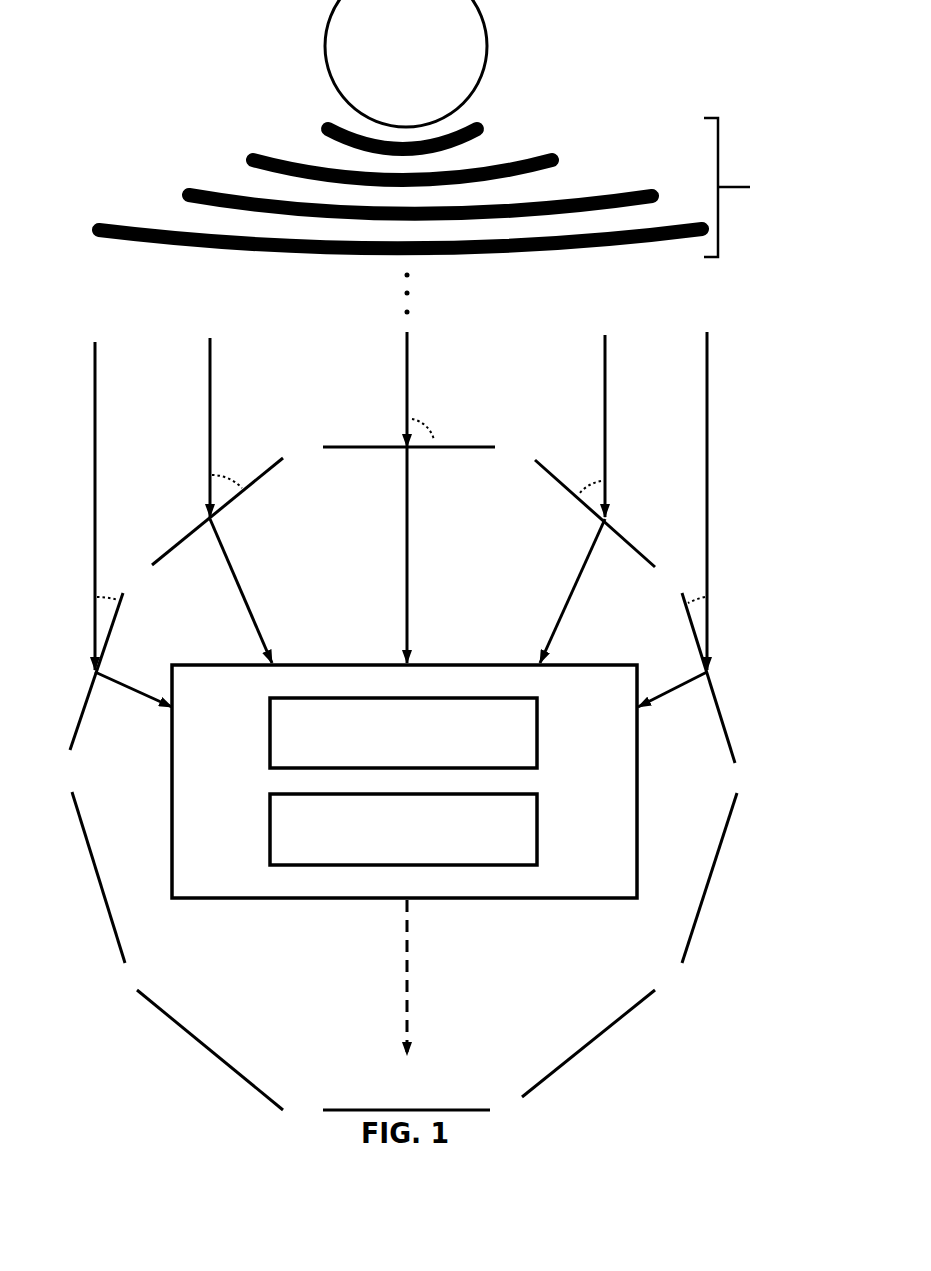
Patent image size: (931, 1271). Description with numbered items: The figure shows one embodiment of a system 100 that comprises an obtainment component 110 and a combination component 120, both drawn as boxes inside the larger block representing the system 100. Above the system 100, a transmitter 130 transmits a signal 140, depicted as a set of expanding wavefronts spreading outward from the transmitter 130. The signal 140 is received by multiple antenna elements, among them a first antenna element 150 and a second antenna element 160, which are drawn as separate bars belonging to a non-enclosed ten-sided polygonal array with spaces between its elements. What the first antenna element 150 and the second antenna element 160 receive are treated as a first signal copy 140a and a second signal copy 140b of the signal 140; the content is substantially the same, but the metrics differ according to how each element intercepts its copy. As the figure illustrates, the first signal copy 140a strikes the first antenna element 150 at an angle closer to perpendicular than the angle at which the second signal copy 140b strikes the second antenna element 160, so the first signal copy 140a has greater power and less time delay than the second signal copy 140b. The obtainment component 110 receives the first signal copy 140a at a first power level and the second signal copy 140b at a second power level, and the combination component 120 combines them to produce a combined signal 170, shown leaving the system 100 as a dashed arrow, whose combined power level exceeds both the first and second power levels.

The system 100 is at (638, 772).
The obtainment component 110 is at (538, 720).
The combination component 120 is at (538, 820).
The transmitter 130 is at (485, 40).
The signal 140 is at (750, 187).
The first signal copy 140a is at (408, 360).
The second signal copy 140b is at (607, 360).
The first antenna element 150 is at (470, 445).
The second antenna element 160 is at (620, 525).
The combined signal 170 is at (410, 970).